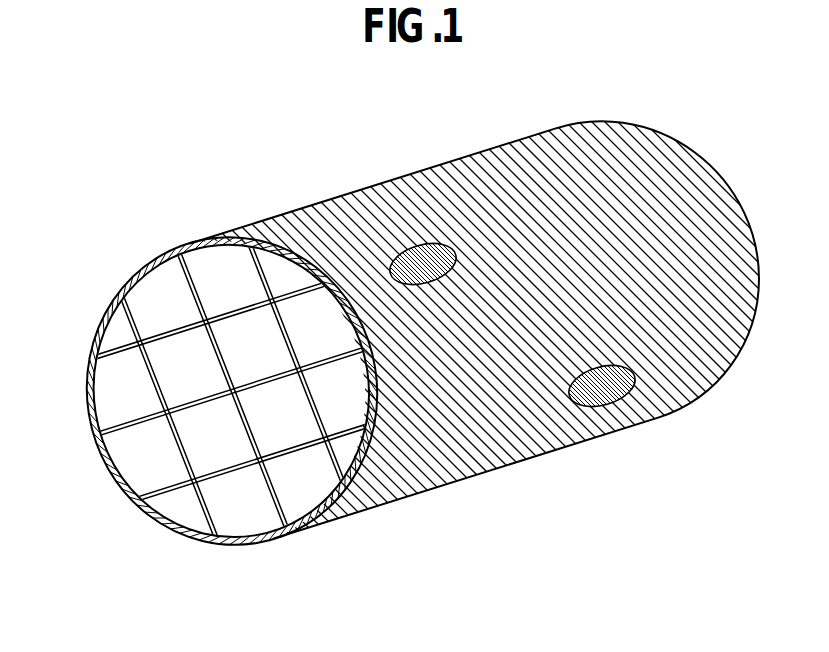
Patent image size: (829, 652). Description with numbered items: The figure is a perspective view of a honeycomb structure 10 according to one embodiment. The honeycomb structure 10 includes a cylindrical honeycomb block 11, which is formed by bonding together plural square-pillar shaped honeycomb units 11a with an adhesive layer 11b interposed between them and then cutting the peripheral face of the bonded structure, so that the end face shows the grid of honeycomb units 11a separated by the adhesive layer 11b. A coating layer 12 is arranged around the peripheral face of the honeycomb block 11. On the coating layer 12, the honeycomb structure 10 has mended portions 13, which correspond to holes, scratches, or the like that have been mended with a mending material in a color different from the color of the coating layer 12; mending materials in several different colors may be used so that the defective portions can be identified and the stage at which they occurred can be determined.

The honeycomb structure 10 is at (363, 170).
The honeycomb block 11 is at (219, 556).
The honeycomb unit 11a is at (213, 458).
The adhesive layer 11b is at (345, 473).
The coating layer 12 is at (133, 277).
The mended portion 13 is at (605, 392).